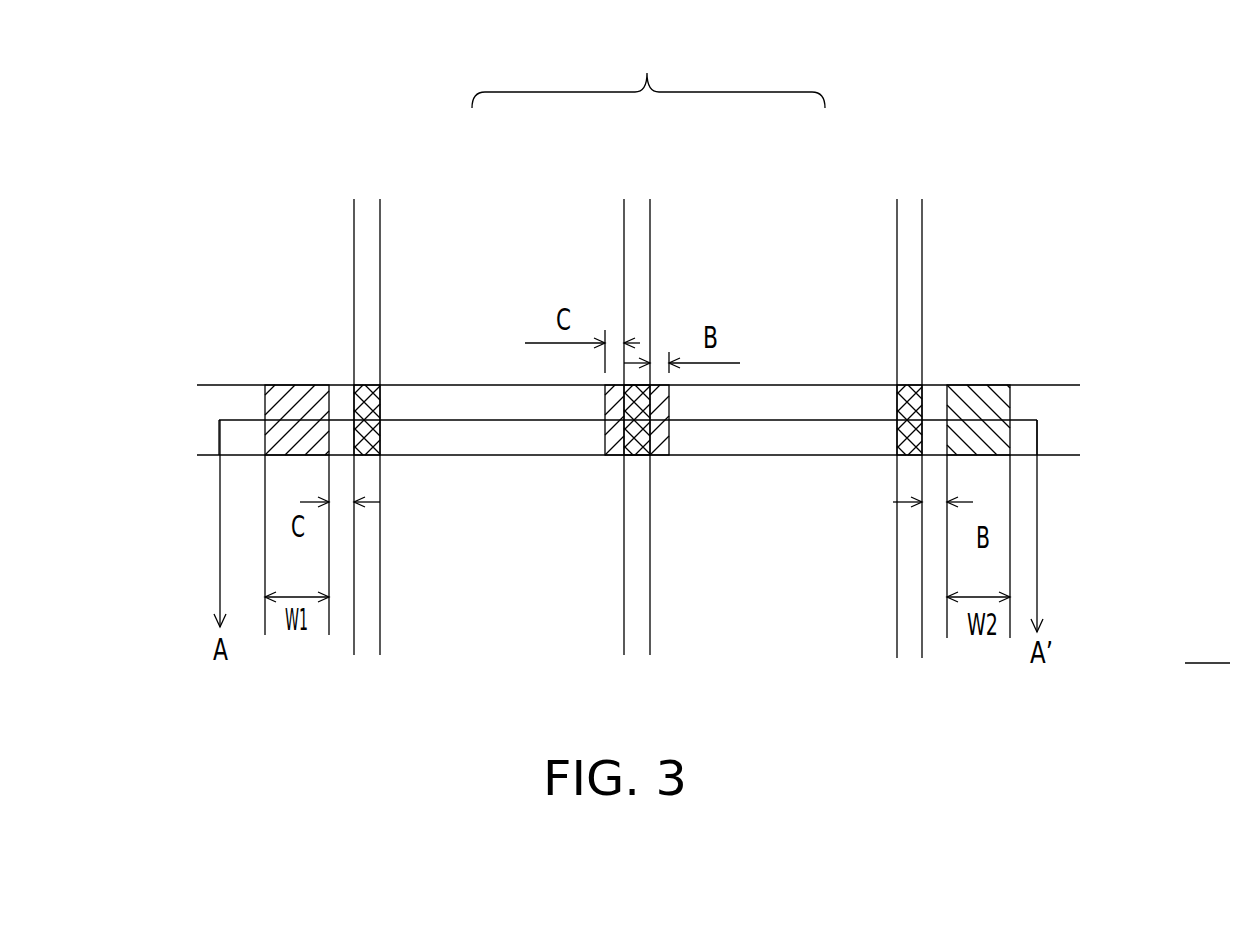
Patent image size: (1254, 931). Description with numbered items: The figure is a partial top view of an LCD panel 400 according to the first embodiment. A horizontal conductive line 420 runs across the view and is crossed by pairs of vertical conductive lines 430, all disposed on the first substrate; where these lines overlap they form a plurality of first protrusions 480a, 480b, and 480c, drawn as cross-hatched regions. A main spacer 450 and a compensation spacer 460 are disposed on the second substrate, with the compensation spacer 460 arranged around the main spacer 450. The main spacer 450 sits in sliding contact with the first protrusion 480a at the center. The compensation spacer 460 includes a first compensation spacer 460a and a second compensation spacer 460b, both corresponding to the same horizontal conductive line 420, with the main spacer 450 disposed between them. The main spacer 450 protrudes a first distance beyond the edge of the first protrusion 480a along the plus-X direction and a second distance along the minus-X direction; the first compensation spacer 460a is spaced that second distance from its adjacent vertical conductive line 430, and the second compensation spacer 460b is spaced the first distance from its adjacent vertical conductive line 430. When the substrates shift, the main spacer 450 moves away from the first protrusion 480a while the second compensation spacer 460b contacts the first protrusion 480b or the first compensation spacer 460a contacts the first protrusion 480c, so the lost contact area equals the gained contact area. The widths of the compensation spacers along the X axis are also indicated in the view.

The LCD panel 400 is at (1207, 646).
The horizontal conductive line 420 is at (455, 397).
The vertical conductive line 430 is at (367, 247).
The main spacer 450 is at (663, 435).
The compensation spacer 460 is at (637, 334).
The first compensation spacer 460a is at (288, 398).
The second compensation spacer 460b is at (990, 400).
The first protrusion 480a is at (618, 433).
The first protrusion 480b is at (890, 462).
The first protrusion 480c is at (382, 432).